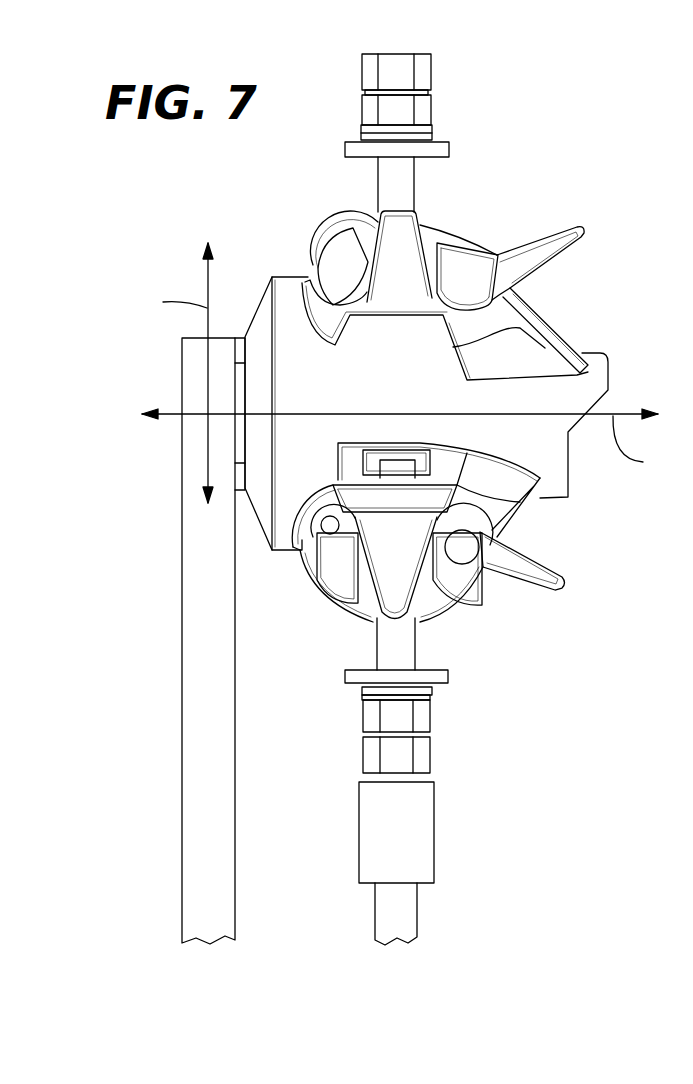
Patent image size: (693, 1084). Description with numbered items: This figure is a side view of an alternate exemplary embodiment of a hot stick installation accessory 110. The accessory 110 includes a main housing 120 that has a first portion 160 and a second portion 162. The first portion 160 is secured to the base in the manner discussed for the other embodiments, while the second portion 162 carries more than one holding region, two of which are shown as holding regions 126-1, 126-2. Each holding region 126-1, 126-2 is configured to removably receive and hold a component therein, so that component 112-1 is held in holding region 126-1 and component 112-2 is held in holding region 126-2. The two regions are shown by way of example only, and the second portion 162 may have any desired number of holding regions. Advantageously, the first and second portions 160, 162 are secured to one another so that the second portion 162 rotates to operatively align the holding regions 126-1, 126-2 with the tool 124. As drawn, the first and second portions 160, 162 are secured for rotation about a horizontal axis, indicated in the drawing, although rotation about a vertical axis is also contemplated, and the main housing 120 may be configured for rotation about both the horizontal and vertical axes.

The hot stick installation accessory 110 is at (562, 125).
The component 112-1 is at (475, 240).
The component 112-2 is at (467, 603).
The main housing 120 is at (176, 705).
The tool 124 is at (443, 832).
The holding region 126-1 is at (517, 356).
The holding region 126-2 is at (497, 483).
The first portion 160 is at (207, 575).
The second portion 162 is at (285, 298).